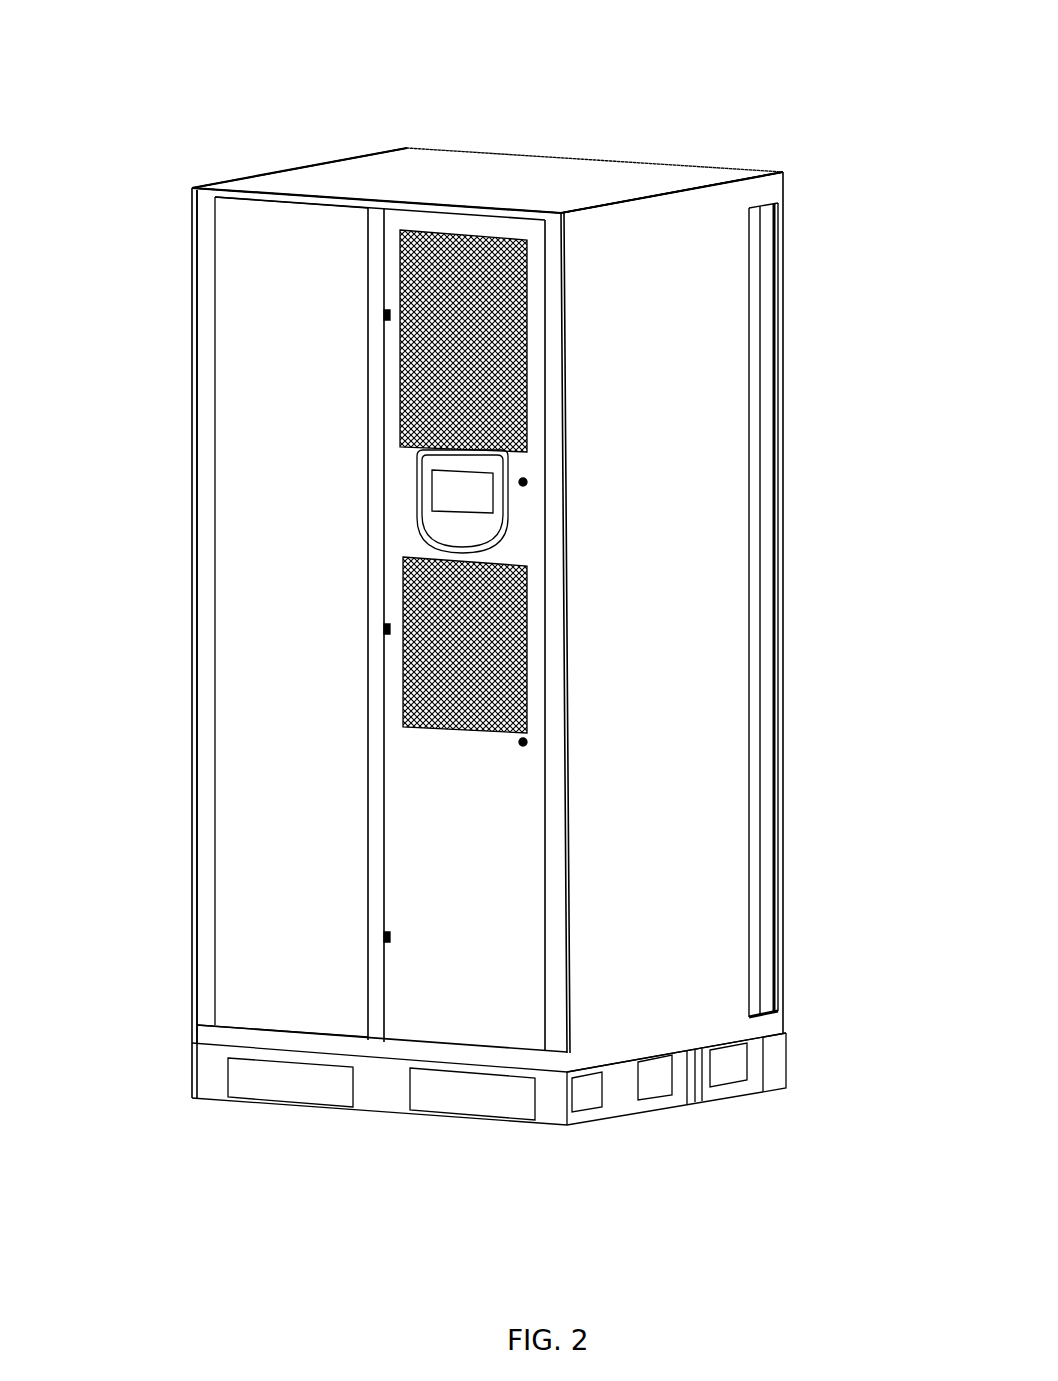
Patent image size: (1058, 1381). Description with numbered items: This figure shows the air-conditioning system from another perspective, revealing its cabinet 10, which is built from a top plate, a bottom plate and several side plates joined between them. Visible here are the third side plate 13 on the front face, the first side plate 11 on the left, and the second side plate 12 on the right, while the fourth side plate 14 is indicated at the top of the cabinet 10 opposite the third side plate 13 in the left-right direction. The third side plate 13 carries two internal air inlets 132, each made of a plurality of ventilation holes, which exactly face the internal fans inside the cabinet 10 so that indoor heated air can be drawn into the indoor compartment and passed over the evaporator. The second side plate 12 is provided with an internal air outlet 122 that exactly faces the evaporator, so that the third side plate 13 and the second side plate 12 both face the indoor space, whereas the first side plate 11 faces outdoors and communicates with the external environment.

The cabinet 10 is at (360, 155).
The fourth side plate 14 is at (645, 165).
The first side plate 11 is at (190, 447).
The third side plate 13 is at (413, 998).
The internal air inlets 132 is at (533, 640).
The second side plate 12 is at (735, 872).
The internal air outlet 122 is at (755, 725).